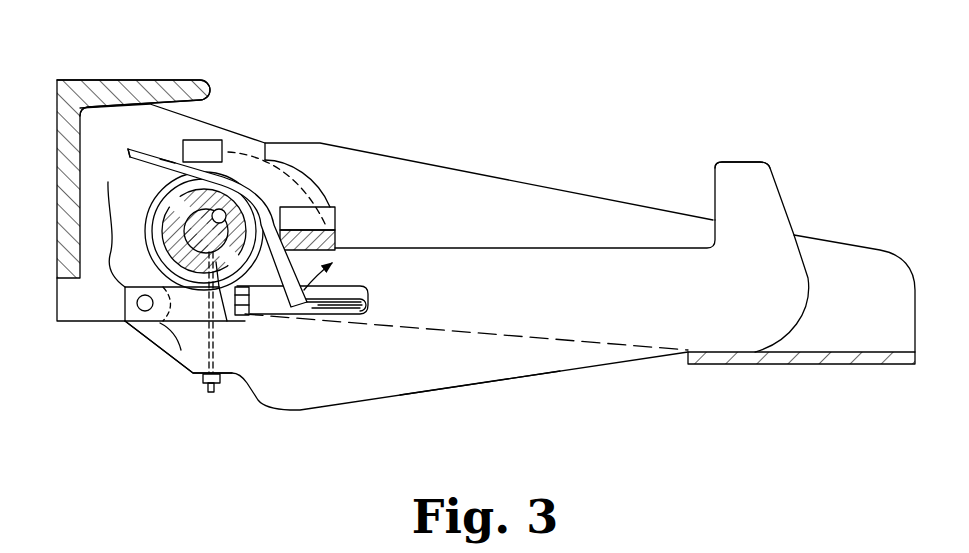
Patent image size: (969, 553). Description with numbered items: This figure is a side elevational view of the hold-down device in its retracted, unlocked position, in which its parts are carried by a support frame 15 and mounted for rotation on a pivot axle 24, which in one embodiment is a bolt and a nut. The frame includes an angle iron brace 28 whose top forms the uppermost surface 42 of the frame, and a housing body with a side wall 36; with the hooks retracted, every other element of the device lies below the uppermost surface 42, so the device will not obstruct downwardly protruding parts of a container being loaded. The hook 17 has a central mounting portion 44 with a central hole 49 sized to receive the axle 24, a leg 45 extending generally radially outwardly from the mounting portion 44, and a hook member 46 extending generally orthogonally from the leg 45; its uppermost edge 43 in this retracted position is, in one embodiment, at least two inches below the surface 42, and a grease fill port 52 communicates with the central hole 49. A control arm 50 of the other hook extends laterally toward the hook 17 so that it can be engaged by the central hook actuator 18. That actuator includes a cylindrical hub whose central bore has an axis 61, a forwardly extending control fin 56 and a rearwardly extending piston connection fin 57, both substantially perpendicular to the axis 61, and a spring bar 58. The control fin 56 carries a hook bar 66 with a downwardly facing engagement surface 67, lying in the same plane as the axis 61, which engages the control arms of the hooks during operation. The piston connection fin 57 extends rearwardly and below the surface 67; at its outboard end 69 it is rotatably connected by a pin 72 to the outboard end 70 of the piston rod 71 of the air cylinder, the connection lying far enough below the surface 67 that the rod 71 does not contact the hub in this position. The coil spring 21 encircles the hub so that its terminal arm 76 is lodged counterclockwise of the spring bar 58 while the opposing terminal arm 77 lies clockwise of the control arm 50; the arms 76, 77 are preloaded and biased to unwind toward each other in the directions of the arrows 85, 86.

The support frame 15 is at (470, 166).
The hook 17 is at (408, 400).
The central hook actuator 18 is at (224, 314).
The coil spring 21 is at (118, 148).
The pivot axle 24 is at (165, 262).
The angle iron brace 28 is at (127, 78).
The side wall 36 is at (833, 240).
The uppermost surface 42 is at (172, 76).
The uppermost edge 43 is at (742, 161).
The central mounting portion 44 is at (181, 350).
The leg 45 is at (463, 367).
The hook member 46 is at (728, 193).
The central hole 49 is at (224, 212).
The control arm 50 is at (338, 247).
The grease fill port 52 is at (209, 393).
The control fin 56 is at (318, 183).
The piston connection fin 57 is at (161, 212).
The spring bar 58 is at (215, 138).
The axis 61 is at (207, 232).
The hook bar 66 is at (336, 207).
The engagement surface 67 is at (336, 235).
The outboard end 69 is at (125, 312).
The outboard end 70 is at (163, 324).
The piston rod 71 is at (325, 315).
The pin 72 is at (143, 312).
The terminal arm 76 is at (163, 151).
The terminal arm 77 is at (271, 291).
The arrow 85 is at (170, 110).
The arrow 86 is at (335, 275).